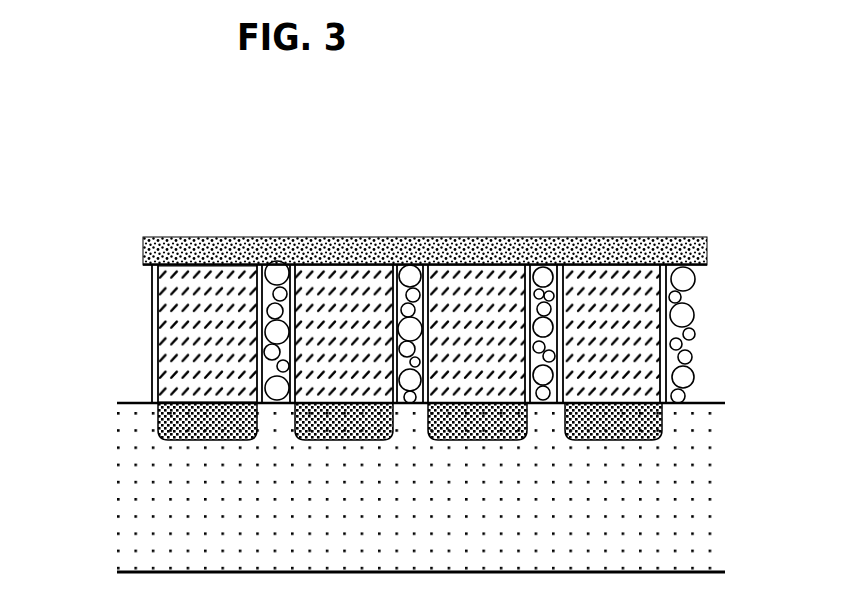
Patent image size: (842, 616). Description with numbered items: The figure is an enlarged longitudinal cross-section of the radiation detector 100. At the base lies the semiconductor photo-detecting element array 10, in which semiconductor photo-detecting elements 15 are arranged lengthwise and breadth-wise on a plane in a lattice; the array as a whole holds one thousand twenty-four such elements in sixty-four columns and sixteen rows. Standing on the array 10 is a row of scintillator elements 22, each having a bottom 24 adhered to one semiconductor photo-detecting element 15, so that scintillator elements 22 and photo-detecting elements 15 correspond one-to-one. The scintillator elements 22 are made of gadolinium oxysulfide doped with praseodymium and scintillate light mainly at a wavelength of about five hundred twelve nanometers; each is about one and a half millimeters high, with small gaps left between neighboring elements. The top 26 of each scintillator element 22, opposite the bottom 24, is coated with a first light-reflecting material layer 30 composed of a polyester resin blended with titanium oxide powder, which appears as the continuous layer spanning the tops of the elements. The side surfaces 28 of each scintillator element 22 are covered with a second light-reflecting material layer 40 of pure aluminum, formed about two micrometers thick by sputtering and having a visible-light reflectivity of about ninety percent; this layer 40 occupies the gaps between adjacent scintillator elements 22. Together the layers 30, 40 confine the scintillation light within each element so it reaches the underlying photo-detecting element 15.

The radiation detector 100 is at (90, 204).
The semiconductor photo-detecting element array 10 is at (635, 510).
The semiconductor photo-detecting element 15 is at (645, 440).
The scintillator element 22 is at (630, 287).
The bottom 24 is at (197, 405).
The top 26 is at (207, 268).
The side surfaces 28 is at (158, 314).
The first light-reflecting material layer 30 is at (617, 252).
The second light-reflecting material layer 40 is at (670, 343).